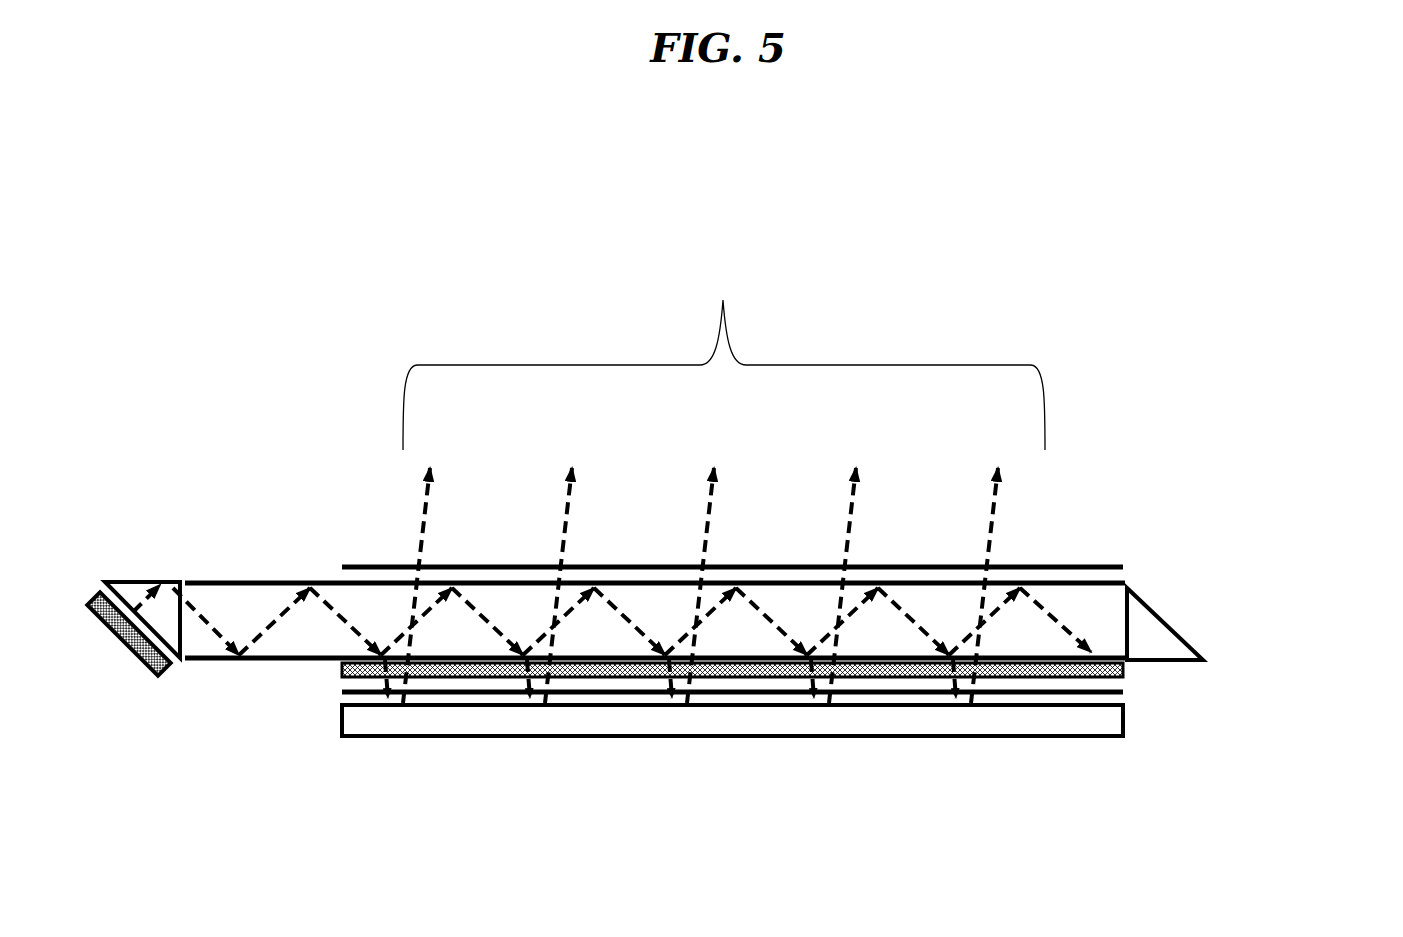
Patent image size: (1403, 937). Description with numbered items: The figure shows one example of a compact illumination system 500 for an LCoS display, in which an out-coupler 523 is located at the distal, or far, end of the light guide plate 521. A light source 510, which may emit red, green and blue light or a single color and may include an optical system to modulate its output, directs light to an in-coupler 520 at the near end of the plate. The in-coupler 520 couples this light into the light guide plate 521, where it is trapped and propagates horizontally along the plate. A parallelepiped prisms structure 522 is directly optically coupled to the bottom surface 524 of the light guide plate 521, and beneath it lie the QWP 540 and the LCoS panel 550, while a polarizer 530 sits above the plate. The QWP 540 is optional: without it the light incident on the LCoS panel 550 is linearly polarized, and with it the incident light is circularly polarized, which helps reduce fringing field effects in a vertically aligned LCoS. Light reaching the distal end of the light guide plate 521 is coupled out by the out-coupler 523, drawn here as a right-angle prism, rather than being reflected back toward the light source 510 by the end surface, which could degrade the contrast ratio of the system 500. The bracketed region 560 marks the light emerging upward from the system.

The compact illumination system 500 is at (1172, 318).
The light source 510 is at (135, 655).
The in-coupler 520 is at (173, 580).
The light guide plate 521 is at (282, 578).
The parallelepiped prisms structure 522 is at (1133, 676).
The out-coupler 523 is at (1190, 642).
The bottom surface 524 is at (210, 661).
The polarizer 530 is at (1117, 558).
The QWP 540 is at (340, 690).
The LCoS panel 550 is at (843, 737).
The output light beams 560 is at (723, 300).